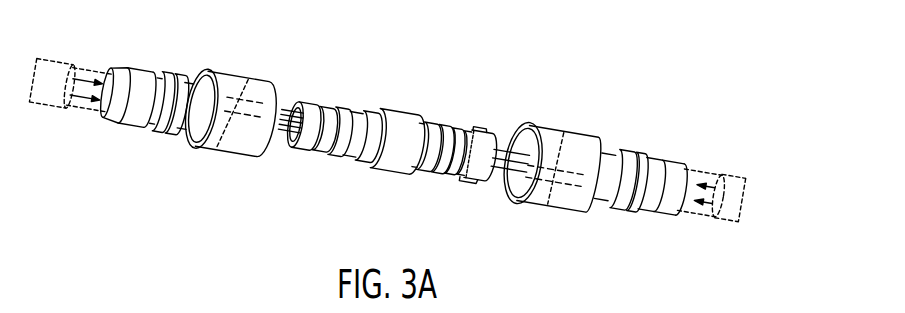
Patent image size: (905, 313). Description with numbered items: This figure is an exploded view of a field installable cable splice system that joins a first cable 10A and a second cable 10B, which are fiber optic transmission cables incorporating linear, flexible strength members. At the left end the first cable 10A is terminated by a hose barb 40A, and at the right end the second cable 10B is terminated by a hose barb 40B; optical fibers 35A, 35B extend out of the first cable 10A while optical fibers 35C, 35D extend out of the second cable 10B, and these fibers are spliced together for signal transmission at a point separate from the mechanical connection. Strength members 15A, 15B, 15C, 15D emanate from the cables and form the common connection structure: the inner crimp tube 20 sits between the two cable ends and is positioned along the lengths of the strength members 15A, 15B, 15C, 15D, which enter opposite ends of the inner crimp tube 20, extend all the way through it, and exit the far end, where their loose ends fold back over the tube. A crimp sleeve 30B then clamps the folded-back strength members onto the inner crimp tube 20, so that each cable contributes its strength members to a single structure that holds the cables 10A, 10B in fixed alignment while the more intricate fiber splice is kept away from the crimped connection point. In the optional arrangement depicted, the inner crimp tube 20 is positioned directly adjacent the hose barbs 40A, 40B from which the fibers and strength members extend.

The first cable 10A is at (48, 59).
The second cable 10B is at (731, 174).
The strength member 15A is at (220, 162).
The strength member 15B is at (242, 72).
The strength member 15C is at (292, 108).
The strength member 15D is at (315, 147).
The inner crimp tube 20 is at (399, 117).
The crimp sleeve 30B is at (583, 143).
The optical fiber 35A is at (88, 108).
The optical fiber 35B is at (89, 72).
The optical fiber 35C is at (707, 183).
The optical fiber 35D is at (707, 210).
The hose barb 40A is at (143, 113).
The hose barb 40B is at (642, 203).